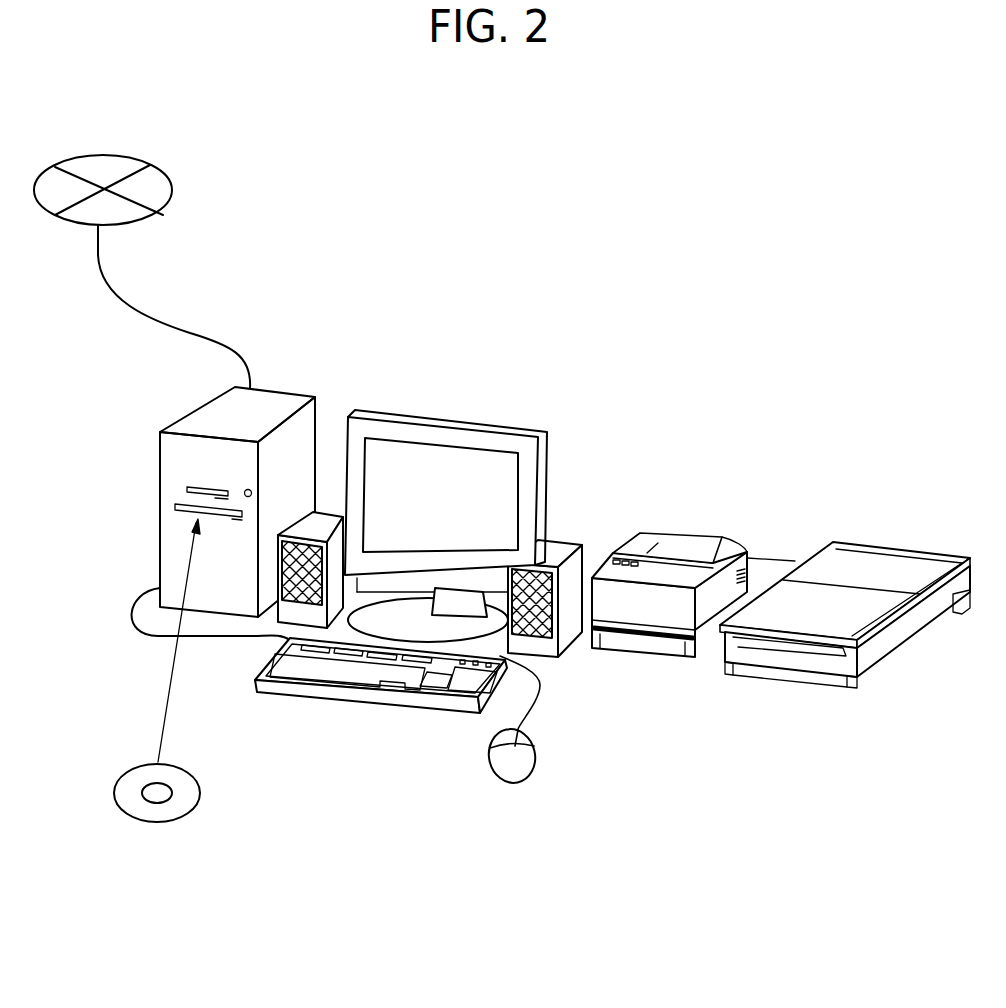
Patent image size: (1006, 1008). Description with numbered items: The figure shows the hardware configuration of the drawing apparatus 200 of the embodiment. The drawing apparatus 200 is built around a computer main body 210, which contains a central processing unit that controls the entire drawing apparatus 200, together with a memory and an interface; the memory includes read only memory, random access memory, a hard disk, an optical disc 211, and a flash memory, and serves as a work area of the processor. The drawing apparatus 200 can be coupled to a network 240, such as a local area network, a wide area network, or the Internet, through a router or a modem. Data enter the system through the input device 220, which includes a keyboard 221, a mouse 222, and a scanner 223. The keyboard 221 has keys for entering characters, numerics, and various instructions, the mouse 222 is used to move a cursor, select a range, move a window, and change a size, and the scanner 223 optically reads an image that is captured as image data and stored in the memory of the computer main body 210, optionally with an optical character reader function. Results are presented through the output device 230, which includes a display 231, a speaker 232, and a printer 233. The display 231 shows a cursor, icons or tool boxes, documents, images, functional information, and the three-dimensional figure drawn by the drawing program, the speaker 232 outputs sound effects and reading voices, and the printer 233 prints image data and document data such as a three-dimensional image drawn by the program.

The drawing apparatus 200 is at (729, 234).
The computer main body 210 is at (274, 392).
The optical disc 211 is at (182, 768).
The input device 220 is at (657, 837).
The keyboard 221 is at (412, 710).
The mouse 222 is at (512, 782).
The scanner 223 is at (740, 676).
The output device 230 is at (730, 370).
The display 231 is at (510, 432).
The speaker 232 is at (572, 538).
The printer 233 is at (697, 530).
The network 240 is at (120, 156).